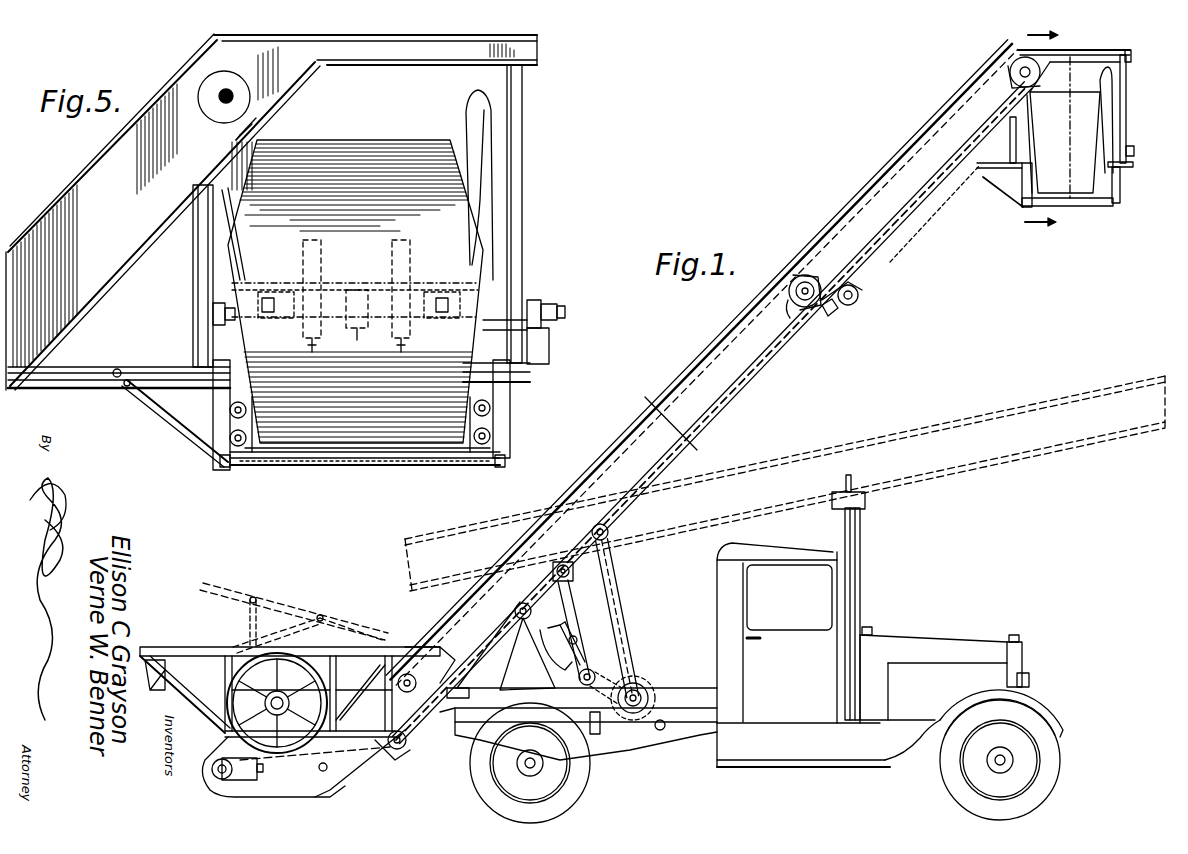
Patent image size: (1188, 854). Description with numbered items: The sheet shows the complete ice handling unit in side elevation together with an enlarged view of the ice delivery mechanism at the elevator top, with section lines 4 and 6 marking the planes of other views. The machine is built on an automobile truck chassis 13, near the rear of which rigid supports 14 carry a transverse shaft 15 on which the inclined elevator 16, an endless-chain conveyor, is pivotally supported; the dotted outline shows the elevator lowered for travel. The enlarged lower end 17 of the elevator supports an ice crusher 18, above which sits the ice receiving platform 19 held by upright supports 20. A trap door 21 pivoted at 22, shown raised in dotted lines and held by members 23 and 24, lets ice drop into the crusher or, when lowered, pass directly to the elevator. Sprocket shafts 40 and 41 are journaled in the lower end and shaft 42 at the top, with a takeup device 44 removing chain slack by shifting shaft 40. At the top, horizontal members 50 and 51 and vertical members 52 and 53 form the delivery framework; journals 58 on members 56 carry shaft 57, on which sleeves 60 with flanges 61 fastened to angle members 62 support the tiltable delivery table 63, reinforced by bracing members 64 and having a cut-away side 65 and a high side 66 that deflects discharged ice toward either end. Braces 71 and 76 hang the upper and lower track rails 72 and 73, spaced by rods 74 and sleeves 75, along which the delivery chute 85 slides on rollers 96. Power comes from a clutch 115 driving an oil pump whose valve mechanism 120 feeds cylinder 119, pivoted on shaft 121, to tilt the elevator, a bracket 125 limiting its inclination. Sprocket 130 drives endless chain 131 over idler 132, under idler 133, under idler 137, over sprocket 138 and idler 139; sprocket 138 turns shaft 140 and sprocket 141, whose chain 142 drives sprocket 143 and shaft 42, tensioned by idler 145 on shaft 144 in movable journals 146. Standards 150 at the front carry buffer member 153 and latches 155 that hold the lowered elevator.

In FIG. 1, the section line 4 is at (664, 425).
In FIG. 1, the section line 6 is at (1049, 129).
In FIG. 1, the automobile truck chassis 13 is at (705, 695).
In FIG. 1, the rigid supports 14 is at (605, 584).
In FIG. 1, the transverse shaft 15 is at (573, 570).
In FIG. 5, the inclined elevator 16 is at (100, 162).
In FIG. 1, the inclined elevator 16 is at (705, 408).
In FIG. 1, the lower end of the elevator 17 is at (322, 790).
In FIG. 1, the ice crusher 18 is at (340, 680).
In FIG. 1, the ice receiving platform 19 is at (183, 648).
In FIG. 1, the upright supports 20 is at (222, 672).
In FIG. 1, the trap door 21 is at (246, 598).
In FIG. 1, the pivot 22 is at (428, 640).
In FIG. 1, the supporting member 23 is at (250, 613).
In FIG. 1, the supporting member 24 is at (290, 620).
In FIG. 1, the transverse sprocket shaft 40 is at (215, 745).
In FIG. 1, the transverse shaft 41 is at (330, 768).
In FIG. 5, the sprocket shaft 42 is at (226, 104).
In FIG. 1, the sprocket shaft 42 is at (1012, 65).
In FIG. 1, the takeup device 44 is at (258, 772).
In FIG. 5, the horizontal frame member 50 is at (537, 46).
In FIG. 1, the horizontal frame member 50 is at (1130, 55).
In FIG. 5, the horizontal frame member 51 is at (518, 378).
In FIG. 1, the horizontal frame member 51 is at (1128, 164).
In FIG. 5, the vertical frame member 52 is at (192, 255).
In FIG. 1, the vertical frame member 52 is at (1010, 137).
In FIG. 5, the vertical frame member 53 is at (524, 97).
In FIG. 1, the vertical frame member 53 is at (1127, 115).
In FIG. 5, the journal supporting member 56 is at (210, 347).
In FIG. 5, the table shaft 57 is at (505, 326).
In FIG. 5, the journals 58 is at (197, 310).
In FIG. 1, the journals 58 is at (1130, 150).
In FIG. 5, the sleeves 60 is at (290, 322).
In FIG. 5, the flanges 61 is at (282, 290).
In FIG. 5, the angle members 62 is at (345, 290).
In FIG. 5, the delivery table 63 is at (350, 140).
In FIG. 1, the delivery table 63 is at (1095, 102).
In FIG. 5, the bracing members 64 is at (390, 256).
In FIG. 5, the table side 65 is at (262, 140).
In FIG. 5, the table side 66 is at (462, 108).
In FIG. 1, the table side 66 is at (1106, 120).
In FIG. 5, the braces 71 is at (213, 397).
In FIG. 1, the braces 71 is at (1120, 178).
In FIG. 5, the upper track rails 72 is at (496, 438).
In FIG. 5, the lower track rails 73 is at (232, 470).
In FIG. 5, the rods 74 is at (355, 468).
In FIG. 5, the spacing sleeves 75 is at (282, 468).
In FIG. 1, the spacing sleeves 75 is at (1095, 206).
In FIG. 5, the braces 76 is at (140, 398).
In FIG. 1, the braces 76 is at (1010, 196).
In FIG. 5, the delivery chute 85 is at (448, 448).
In FIG. 5, the rollers 96 is at (228, 418).
In FIG. 1, the clutch 115 is at (650, 685).
In FIG. 1, the cylinder 119 is at (522, 680).
In FIG. 1, the valve mechanism 120 is at (592, 638).
In FIG. 1, the cylinder pivot shaft 121 is at (582, 684).
In FIG. 1, the bracket 125 is at (458, 688).
In FIG. 1, the sprocket 130 is at (640, 685).
In FIG. 1, the endless chain 131 is at (620, 600).
In FIG. 1, the idler sprocket 132 is at (518, 603).
In FIG. 1, the idler 133 is at (405, 752).
In FIG. 1, the idler 137 is at (400, 655).
In FIG. 1, the sprocket 138 is at (808, 268).
In FIG. 1, the idler 139 is at (608, 530).
In FIG. 1, the shaft 140 is at (790, 289).
In FIG. 1, the sprocket 141 is at (790, 308).
In FIG. 1, the chain 142 is at (920, 232).
In FIG. 1, the sprocket 143 is at (1008, 73).
In FIG. 1, the idler shaft 144 is at (858, 297).
In FIG. 1, the idler 145 is at (870, 280).
In FIG. 1, the movable journals 146 is at (835, 316).
In FIG. 1, the standards 150 is at (858, 535).
In FIG. 1, the buffer member 153 is at (865, 504).
In FIG. 1, the latches 155 is at (850, 478).